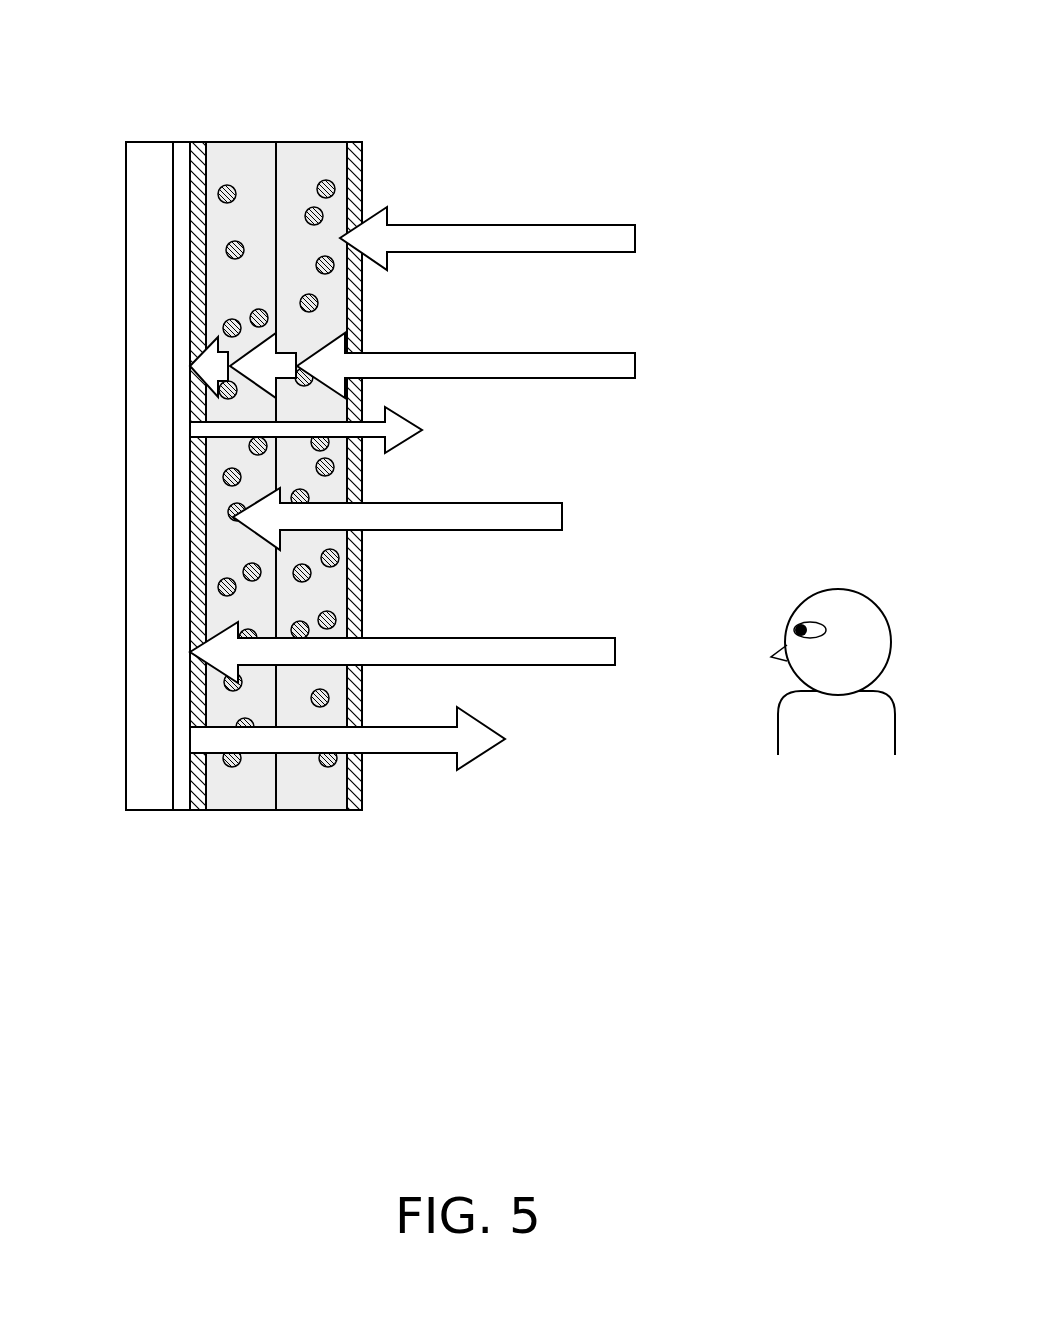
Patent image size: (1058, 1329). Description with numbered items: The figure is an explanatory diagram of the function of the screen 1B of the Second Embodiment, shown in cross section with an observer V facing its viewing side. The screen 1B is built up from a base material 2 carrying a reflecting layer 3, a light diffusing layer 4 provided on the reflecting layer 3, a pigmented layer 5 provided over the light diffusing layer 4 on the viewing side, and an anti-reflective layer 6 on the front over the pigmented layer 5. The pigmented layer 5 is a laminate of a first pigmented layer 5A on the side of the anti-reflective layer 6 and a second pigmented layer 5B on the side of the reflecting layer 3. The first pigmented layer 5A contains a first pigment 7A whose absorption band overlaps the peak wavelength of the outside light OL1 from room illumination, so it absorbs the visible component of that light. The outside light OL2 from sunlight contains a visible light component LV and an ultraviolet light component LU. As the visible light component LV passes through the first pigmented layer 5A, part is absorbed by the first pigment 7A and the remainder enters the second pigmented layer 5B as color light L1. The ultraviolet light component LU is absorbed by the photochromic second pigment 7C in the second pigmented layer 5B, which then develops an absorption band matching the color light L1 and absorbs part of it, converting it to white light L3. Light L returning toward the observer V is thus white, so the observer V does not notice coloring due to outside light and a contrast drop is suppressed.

The screen 1B is at (437, 88).
The base material 2 is at (152, 800).
The reflecting layer 3 is at (182, 800).
The light diffusing layer 4 is at (200, 815).
The pigmented layer 5 is at (271, 501).
The first pigmented layer 5A is at (311, 478).
The second pigmented layer 5B is at (235, 478).
The anti-reflective layer 6 is at (350, 810).
The first pigment 7A is at (326, 180).
The second pigment 7C is at (228, 184).
The outside light OL1 is at (635, 238).
The outside light OL2 is at (508, 441).
The visible light component LV is at (625, 363).
The ultraviolet light component LU is at (471, 519).
The color light L1 is at (260, 352).
The white light L3 is at (190, 367).
The emitted light L is at (478, 733).
The observer V is at (855, 591).